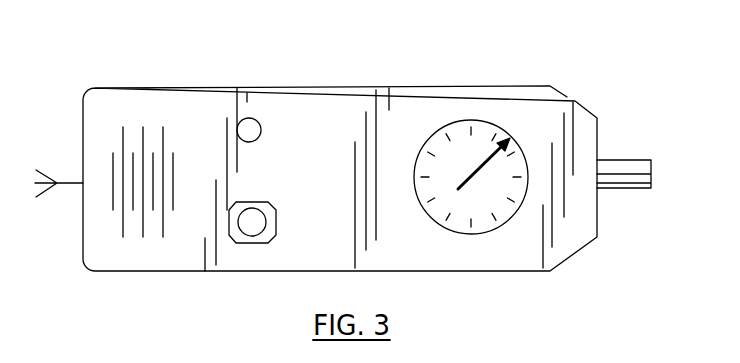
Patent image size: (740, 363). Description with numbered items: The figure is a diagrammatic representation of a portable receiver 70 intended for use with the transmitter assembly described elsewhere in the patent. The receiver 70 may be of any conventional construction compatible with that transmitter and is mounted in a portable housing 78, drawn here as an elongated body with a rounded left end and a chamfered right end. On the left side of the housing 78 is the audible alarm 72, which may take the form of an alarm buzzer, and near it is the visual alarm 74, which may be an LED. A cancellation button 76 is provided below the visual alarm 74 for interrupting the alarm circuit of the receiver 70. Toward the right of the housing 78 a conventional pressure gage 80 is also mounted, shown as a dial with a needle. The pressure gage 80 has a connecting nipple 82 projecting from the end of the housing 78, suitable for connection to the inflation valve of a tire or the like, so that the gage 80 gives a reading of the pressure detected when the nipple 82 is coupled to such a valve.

The portable receiver 70 is at (168, 86).
The audible alarm 72 is at (111, 162).
The visual alarm 74 is at (249, 124).
The cancellation button 76 is at (277, 221).
The portable housing 78 is at (404, 86).
The pressure gage 80 is at (433, 213).
The connecting nipple 82 is at (631, 190).